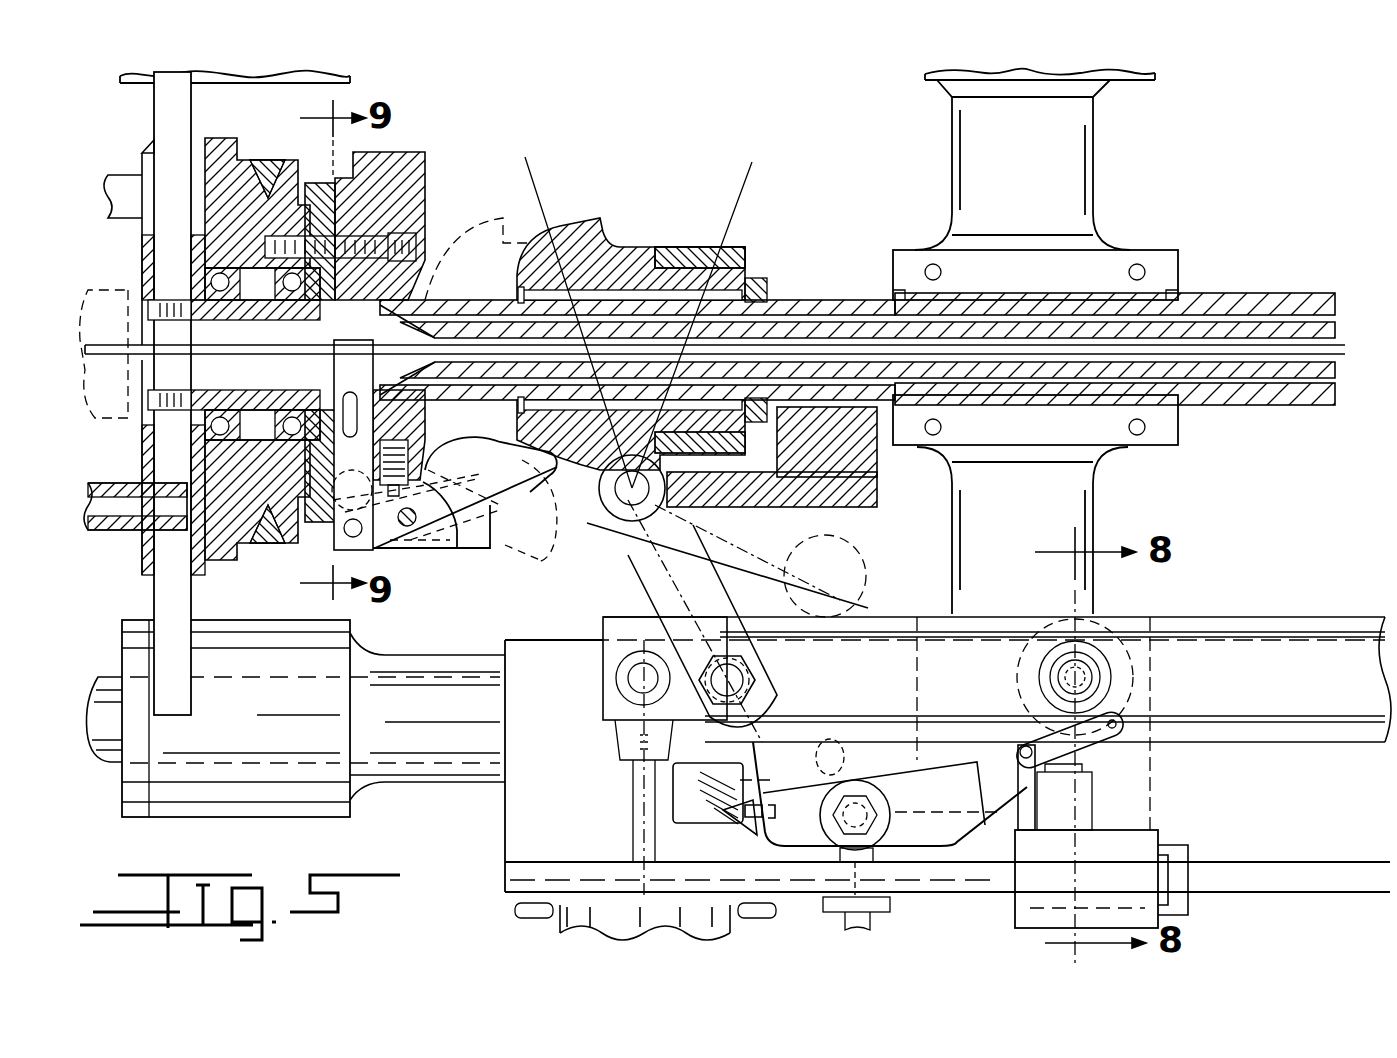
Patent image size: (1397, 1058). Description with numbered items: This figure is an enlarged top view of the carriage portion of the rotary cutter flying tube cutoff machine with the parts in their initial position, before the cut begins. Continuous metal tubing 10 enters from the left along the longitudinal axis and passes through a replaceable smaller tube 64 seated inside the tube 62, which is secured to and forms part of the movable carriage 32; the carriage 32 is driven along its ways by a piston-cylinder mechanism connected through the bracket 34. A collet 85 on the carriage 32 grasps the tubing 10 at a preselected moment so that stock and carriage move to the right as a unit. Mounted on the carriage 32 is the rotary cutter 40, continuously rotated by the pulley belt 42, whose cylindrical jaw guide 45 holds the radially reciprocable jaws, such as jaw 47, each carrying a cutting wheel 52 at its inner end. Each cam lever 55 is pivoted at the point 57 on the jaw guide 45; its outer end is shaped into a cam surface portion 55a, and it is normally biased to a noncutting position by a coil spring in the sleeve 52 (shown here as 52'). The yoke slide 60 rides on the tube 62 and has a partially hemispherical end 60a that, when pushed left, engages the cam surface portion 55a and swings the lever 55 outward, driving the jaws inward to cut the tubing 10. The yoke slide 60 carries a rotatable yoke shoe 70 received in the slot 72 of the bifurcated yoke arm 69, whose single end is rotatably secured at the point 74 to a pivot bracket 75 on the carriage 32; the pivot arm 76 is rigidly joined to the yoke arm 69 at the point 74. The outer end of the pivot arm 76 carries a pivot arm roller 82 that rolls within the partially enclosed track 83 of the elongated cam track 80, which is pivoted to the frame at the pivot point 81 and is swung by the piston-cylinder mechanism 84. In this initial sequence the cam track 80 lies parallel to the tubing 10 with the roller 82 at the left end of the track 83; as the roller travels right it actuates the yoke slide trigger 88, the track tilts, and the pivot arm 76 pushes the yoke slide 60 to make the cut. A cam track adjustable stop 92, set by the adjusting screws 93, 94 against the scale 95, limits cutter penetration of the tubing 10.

The tubing 10 is at (1346, 356).
The movable carriage 32 is at (352, 79).
The bracket 34 is at (154, 115).
The rotary cutter 40 is at (412, 150).
The pulley belt 42 is at (252, 170).
The jaw guide 45 is at (433, 165).
The jaw 47 is at (337, 545).
The cutting wheel 52 is at (312, 397).
The lever arm 52' is at (465, 531).
The cam lever 55 is at (552, 552).
The cam surface portion 55a is at (490, 448).
The pivot point 57 is at (410, 527).
The yoke slide 60 is at (630, 247).
The partially hemispherical configuration 60a is at (476, 228).
The tube 62 is at (1234, 295).
The smaller tube 64 is at (1326, 318).
The yoke arm 69 is at (598, 508).
The yoke shoe 70 is at (750, 290).
The slot 72 is at (690, 290).
The pivot point 74 is at (618, 510).
The pivot bracket 75 is at (822, 512).
The pivot arm 76 is at (722, 590).
The cam track 80 is at (1312, 744).
The pivot point 81 is at (1100, 676).
The pivot arm roller 82 is at (757, 680).
The track 83 is at (1254, 641).
The piston-cylinder mechanism 84 is at (715, 932).
The collet 85 is at (120, 288).
The yoke slide trigger 88 is at (1130, 738).
The cam track adjustable stop 92 is at (953, 862).
The adjusting screw 93 is at (888, 828).
The adjusting screw 94 is at (875, 925).
The scale 95 is at (706, 825).